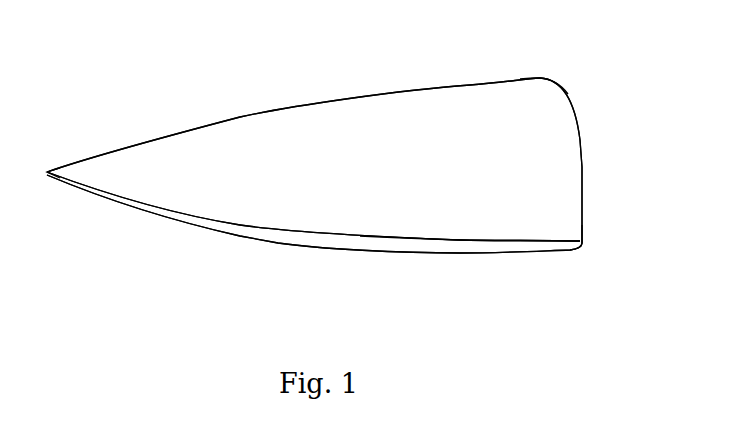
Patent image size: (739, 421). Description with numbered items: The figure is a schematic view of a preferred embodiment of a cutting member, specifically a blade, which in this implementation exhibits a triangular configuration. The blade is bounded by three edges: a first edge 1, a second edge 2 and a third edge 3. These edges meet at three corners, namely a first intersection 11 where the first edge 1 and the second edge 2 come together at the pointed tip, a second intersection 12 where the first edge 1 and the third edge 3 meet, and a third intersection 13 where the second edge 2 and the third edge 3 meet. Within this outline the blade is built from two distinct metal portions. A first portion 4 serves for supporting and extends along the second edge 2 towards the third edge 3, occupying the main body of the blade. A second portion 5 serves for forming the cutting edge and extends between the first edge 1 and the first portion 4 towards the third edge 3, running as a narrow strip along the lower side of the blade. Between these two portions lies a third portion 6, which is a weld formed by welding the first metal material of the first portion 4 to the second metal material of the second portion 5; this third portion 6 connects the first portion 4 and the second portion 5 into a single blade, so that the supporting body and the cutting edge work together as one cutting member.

The first edge 1 is at (277, 243).
The second edge 2 is at (292, 108).
The third edge 3 is at (583, 155).
The first portion 4 is at (389, 139).
The second portion 5 is at (355, 252).
The third portion 6 is at (465, 252).
The first intersection 11 is at (47, 172).
The second intersection 12 is at (583, 245).
The third intersection 13 is at (553, 81).